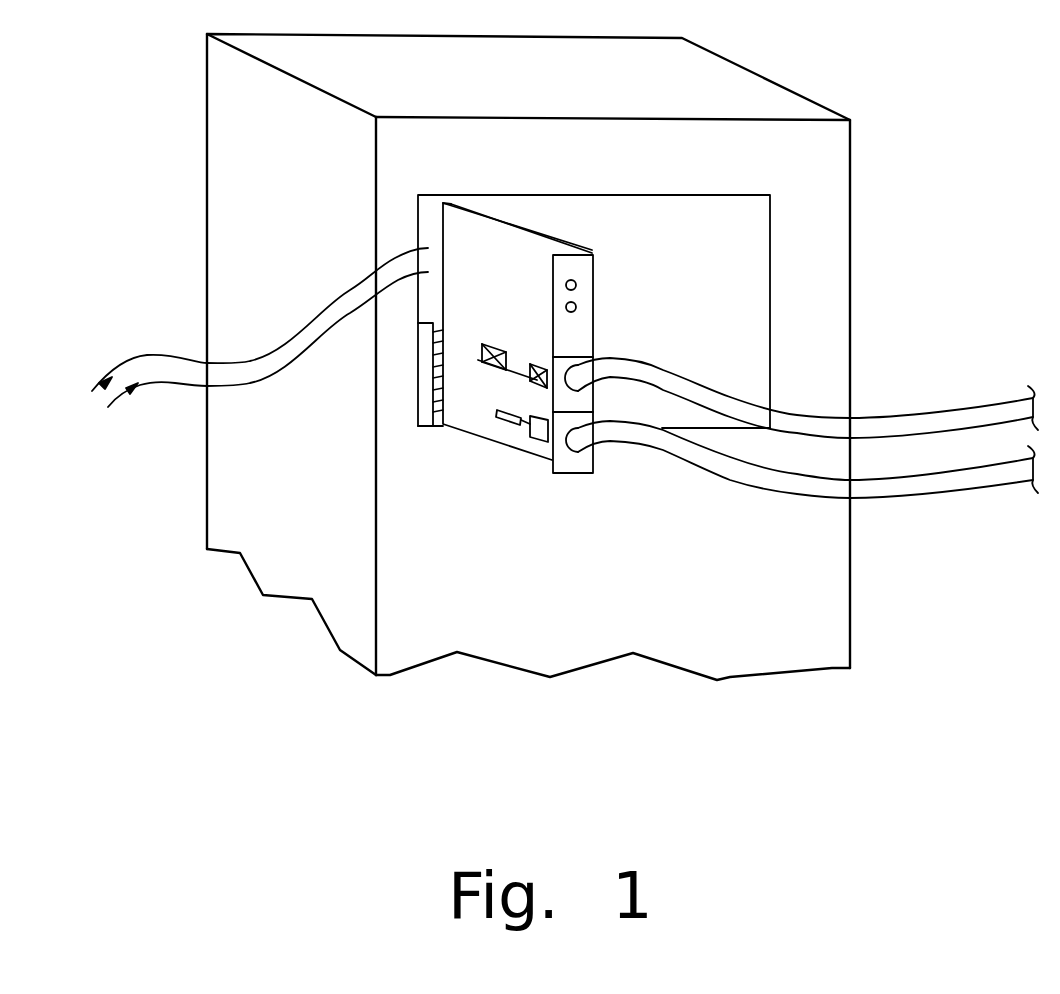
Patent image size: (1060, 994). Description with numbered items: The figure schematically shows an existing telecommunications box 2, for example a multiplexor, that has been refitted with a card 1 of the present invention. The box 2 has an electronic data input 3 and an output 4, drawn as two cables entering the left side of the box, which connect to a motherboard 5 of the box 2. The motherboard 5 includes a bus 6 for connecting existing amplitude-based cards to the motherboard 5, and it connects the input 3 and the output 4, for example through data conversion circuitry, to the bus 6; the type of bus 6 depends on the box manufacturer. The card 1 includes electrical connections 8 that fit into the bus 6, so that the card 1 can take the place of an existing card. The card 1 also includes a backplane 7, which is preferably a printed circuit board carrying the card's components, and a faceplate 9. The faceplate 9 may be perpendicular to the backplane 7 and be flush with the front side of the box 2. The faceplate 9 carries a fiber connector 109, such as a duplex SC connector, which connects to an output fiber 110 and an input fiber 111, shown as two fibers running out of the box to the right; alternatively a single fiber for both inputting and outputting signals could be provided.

The card 1 is at (491, 374).
The telecommunications box 2 is at (220, 223).
The electronic data input 3 is at (157, 357).
The output 4 is at (165, 383).
The motherboard 5 is at (748, 245).
The bus 6 is at (423, 407).
The backplane 7 is at (525, 245).
The electrical connections 8 is at (438, 427).
The faceplate 9 is at (583, 272).
The fiber connector 109 is at (573, 462).
The output fiber 110 is at (765, 478).
The input fiber 111 is at (953, 422).